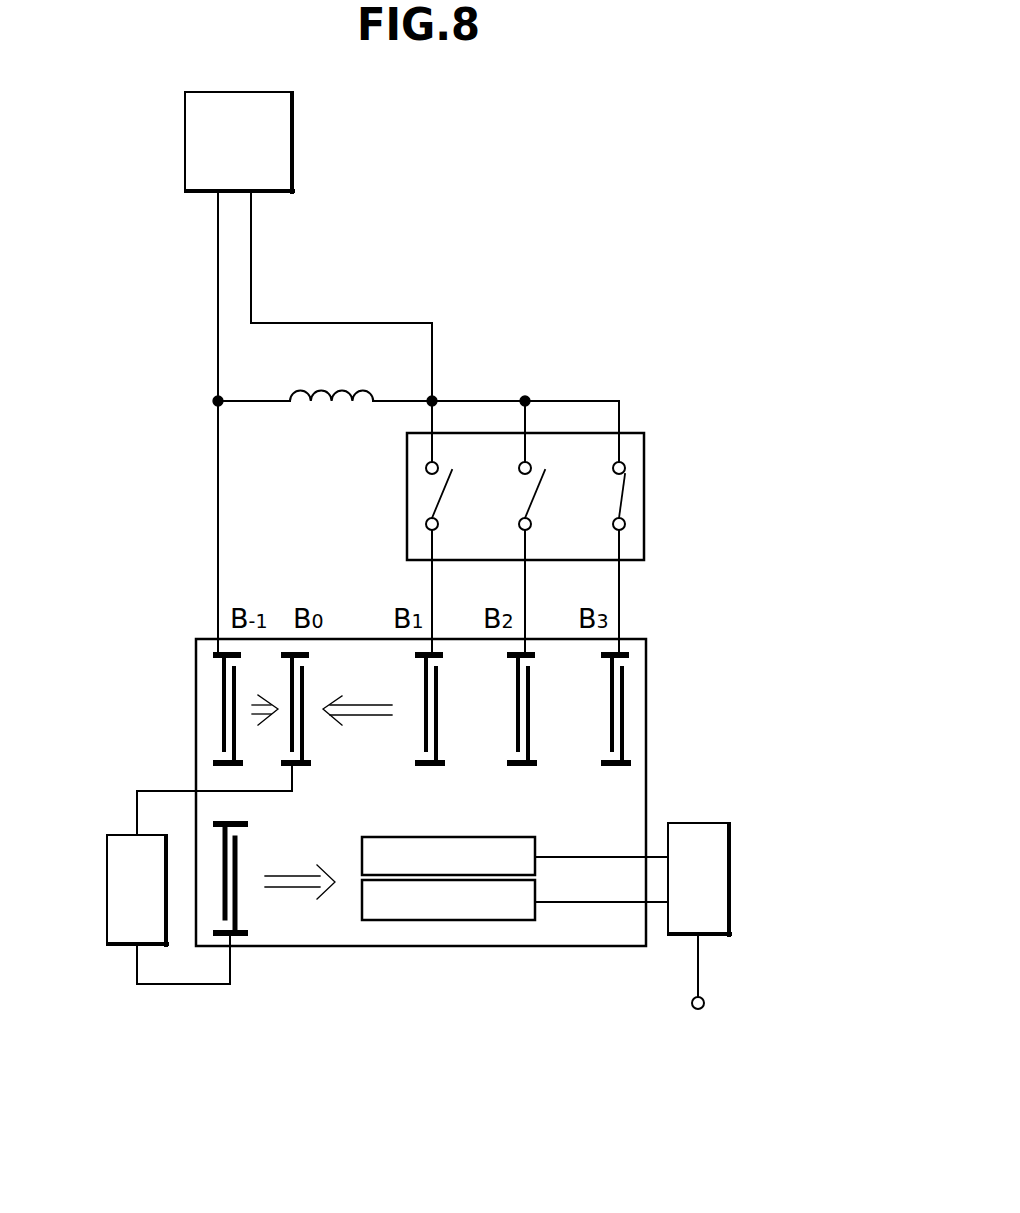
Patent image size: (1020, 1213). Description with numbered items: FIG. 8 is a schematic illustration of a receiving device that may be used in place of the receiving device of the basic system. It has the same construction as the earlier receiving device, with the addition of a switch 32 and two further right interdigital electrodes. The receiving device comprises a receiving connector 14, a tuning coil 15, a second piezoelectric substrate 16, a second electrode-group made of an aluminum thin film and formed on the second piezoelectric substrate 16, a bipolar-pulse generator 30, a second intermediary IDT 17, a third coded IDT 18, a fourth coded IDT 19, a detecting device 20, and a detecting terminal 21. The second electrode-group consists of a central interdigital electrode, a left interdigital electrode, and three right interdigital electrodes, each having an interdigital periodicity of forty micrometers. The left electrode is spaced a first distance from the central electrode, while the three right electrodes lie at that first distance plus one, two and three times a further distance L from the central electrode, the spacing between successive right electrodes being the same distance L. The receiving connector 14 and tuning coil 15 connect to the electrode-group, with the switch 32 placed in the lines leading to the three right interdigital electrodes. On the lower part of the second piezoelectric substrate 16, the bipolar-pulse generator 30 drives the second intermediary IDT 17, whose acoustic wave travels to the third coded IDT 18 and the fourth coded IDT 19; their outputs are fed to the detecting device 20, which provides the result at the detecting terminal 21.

The receiving connector 14 is at (376, 178).
The tuning coil 15 is at (331, 373).
The second piezoelectric substrate 16 is at (467, 792).
The second intermediary IDT 17 is at (291, 911).
The third coded IDT 18 is at (455, 953).
The fourth coded IDT 19 is at (475, 999).
The detecting device 20 is at (771, 922).
The detecting terminal 21 is at (755, 1038).
The bipolar-pulse generator 30 is at (256, 1007).
The switch 32 is at (564, 495).